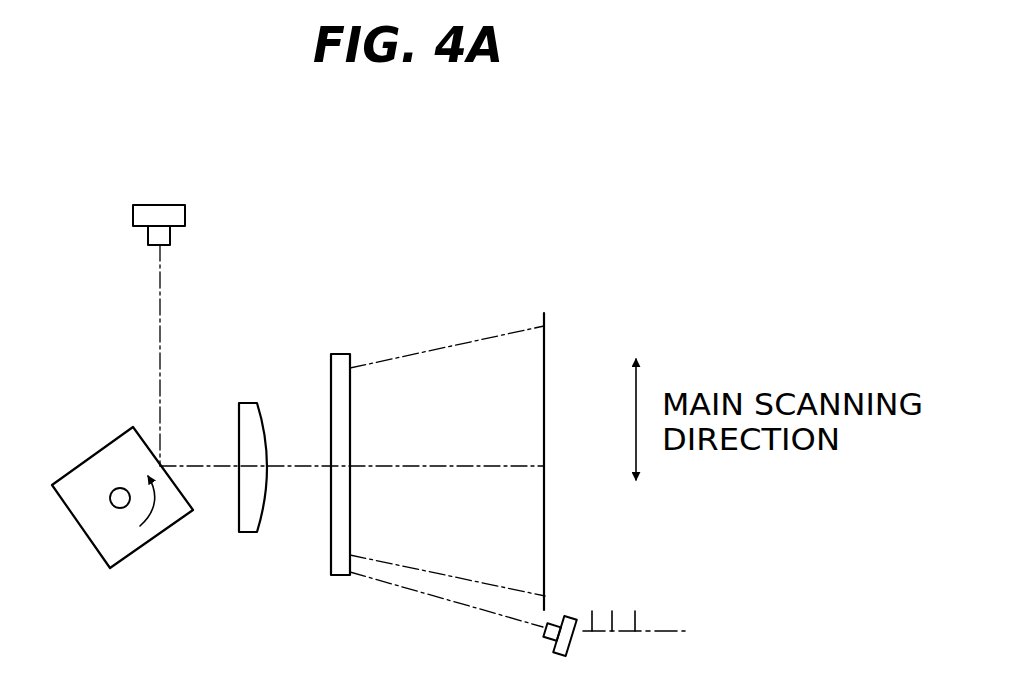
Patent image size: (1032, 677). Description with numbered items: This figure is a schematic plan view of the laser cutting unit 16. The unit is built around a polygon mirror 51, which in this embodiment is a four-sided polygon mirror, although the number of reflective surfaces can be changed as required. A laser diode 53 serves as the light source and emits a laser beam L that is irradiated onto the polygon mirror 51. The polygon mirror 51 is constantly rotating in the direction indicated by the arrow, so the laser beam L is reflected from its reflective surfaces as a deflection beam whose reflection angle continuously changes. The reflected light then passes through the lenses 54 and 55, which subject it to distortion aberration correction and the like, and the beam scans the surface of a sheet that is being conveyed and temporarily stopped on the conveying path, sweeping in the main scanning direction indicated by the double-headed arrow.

The laser cutting unit 16 is at (356, 236).
The polygon mirror 51 is at (110, 440).
The laser diode 53 is at (161, 205).
The lens 54 is at (250, 403).
The lens 55 is at (335, 354).
The laser beam L is at (160, 334).